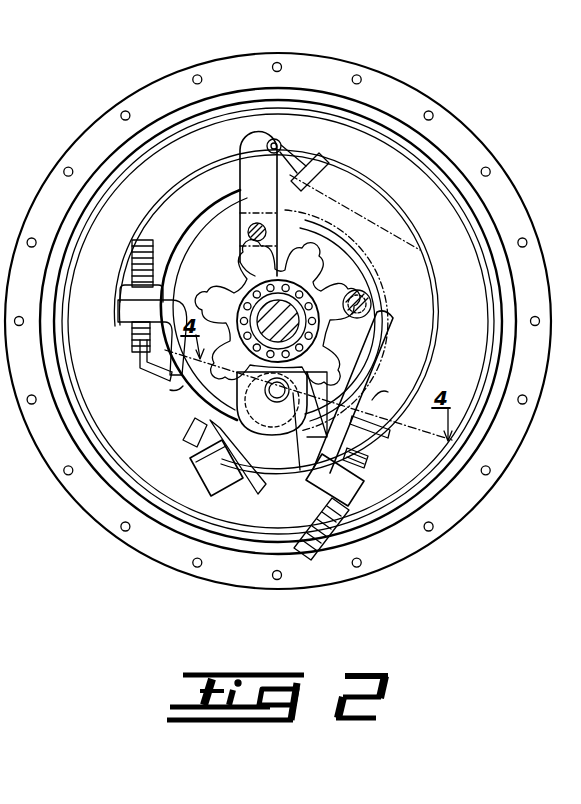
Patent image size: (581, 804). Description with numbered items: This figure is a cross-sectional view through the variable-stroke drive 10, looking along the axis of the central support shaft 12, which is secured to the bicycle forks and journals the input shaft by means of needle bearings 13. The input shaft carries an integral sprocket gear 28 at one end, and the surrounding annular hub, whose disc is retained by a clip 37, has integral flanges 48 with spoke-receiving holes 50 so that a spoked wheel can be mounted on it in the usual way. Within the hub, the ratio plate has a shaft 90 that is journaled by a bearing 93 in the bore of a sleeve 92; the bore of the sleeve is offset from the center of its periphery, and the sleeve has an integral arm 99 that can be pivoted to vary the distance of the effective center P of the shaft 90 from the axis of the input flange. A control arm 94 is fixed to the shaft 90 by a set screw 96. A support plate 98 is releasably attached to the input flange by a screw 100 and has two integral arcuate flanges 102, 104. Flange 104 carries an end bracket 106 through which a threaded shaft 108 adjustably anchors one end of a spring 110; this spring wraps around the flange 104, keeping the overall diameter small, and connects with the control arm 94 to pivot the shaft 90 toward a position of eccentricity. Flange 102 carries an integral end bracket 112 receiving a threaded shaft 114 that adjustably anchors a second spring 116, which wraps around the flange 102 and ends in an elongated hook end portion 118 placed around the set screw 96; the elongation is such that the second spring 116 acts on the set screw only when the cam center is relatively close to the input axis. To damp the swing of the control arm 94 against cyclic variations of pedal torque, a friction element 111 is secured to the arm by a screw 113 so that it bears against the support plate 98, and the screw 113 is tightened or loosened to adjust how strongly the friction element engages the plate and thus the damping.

The drive 10 is at (146, 73).
The central support shaft 12 is at (304, 300).
The needle bearings 13 is at (320, 328).
The sprocket gear 28 is at (220, 297).
The clip 37 is at (358, 124).
The flanges 48 is at (318, 58).
The spoke-receiving holes 50 is at (360, 76).
The shaft 90 is at (282, 428).
The sleeve 92 is at (205, 426).
The bearing 93 is at (386, 332).
The control arm 94 is at (244, 142).
The set screw 96 is at (199, 482).
The support plate 98 is at (200, 243).
The arm 99 is at (382, 348).
The screw 100 is at (370, 302).
The arcuate flange 102 is at (198, 390).
The arcuate flange 104 is at (383, 363).
The end bracket 106 is at (366, 488).
The threaded shaft 108 is at (370, 468).
The spring 110 is at (392, 395).
The friction element 111 is at (262, 182).
The end bracket 112 is at (118, 312).
The screw 113 is at (247, 237).
The threaded shaft 114 is at (137, 340).
The second spring 116 is at (137, 378).
The elongated hook end portion 118 is at (262, 492).
The effective center of the shaft P is at (270, 391).